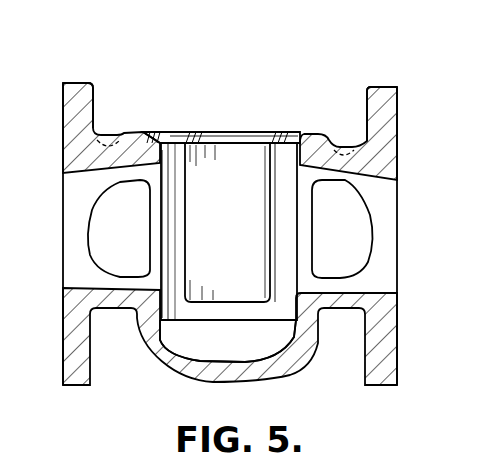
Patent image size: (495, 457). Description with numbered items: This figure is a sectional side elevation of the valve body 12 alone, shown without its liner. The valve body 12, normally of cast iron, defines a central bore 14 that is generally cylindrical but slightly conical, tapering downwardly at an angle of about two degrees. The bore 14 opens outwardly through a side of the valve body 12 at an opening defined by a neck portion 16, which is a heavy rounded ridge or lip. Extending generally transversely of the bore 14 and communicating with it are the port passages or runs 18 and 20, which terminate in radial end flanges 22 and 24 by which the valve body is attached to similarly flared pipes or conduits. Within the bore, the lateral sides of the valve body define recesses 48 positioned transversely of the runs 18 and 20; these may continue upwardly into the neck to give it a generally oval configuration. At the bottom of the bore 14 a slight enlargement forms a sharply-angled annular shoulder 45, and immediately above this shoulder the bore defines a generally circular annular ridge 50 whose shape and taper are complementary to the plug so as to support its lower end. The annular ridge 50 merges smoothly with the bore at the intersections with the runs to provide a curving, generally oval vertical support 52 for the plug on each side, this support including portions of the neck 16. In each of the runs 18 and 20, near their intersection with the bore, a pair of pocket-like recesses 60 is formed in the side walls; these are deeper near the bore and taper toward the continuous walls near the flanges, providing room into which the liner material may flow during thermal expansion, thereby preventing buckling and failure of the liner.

The valve body 12 is at (123, 135).
The central bore 14 is at (169, 145).
The neck portion 16 is at (292, 140).
The port passage 18 is at (360, 182).
The port passage 20 is at (100, 180).
The radial end flange 22 is at (375, 108).
The radial end flange 24 is at (72, 90).
The annular shoulder 45 is at (293, 330).
The recess 48 is at (248, 243).
The annular ridge 50 is at (297, 308).
The vertical support 52 is at (162, 207).
The pocket-like recess 60 is at (128, 231).